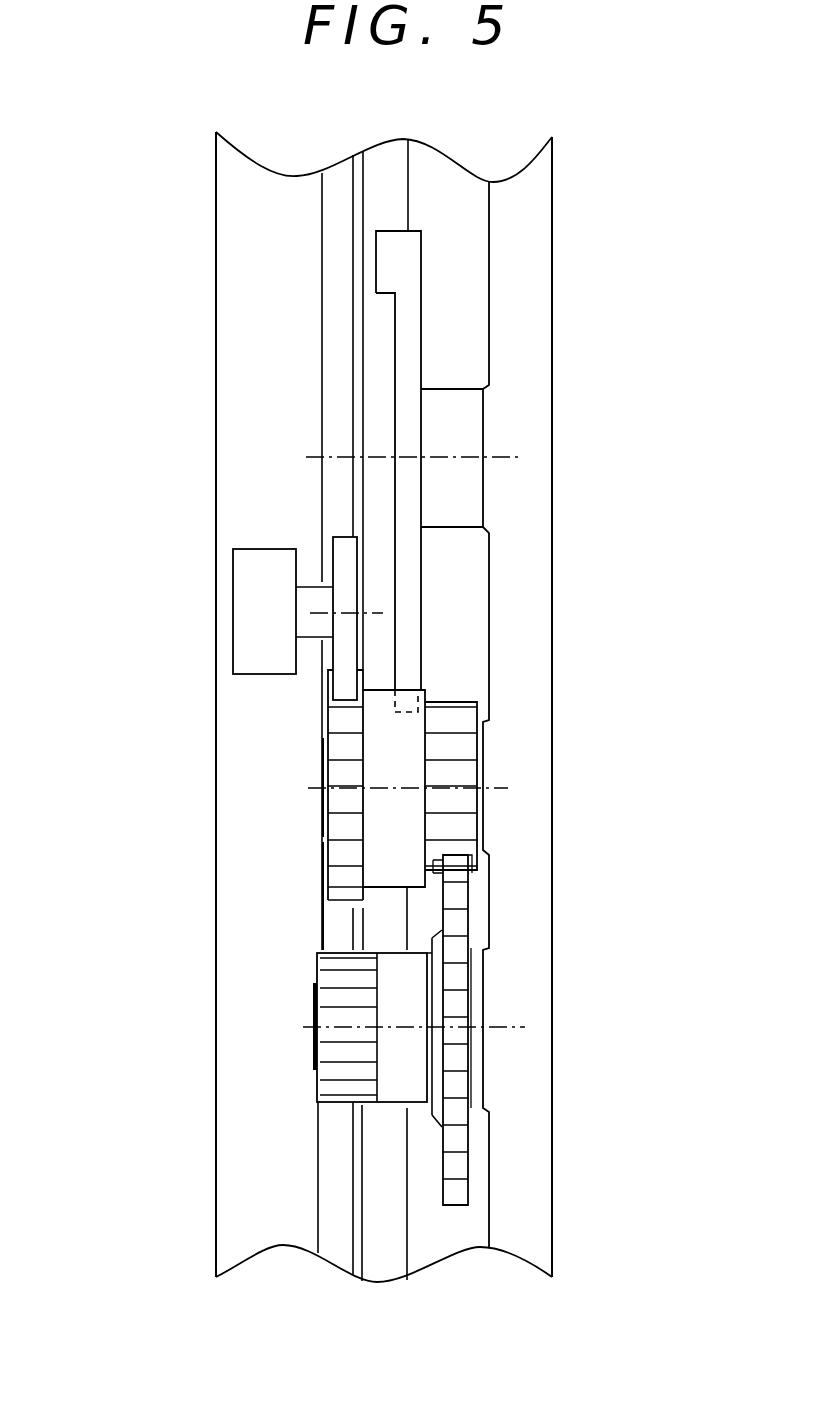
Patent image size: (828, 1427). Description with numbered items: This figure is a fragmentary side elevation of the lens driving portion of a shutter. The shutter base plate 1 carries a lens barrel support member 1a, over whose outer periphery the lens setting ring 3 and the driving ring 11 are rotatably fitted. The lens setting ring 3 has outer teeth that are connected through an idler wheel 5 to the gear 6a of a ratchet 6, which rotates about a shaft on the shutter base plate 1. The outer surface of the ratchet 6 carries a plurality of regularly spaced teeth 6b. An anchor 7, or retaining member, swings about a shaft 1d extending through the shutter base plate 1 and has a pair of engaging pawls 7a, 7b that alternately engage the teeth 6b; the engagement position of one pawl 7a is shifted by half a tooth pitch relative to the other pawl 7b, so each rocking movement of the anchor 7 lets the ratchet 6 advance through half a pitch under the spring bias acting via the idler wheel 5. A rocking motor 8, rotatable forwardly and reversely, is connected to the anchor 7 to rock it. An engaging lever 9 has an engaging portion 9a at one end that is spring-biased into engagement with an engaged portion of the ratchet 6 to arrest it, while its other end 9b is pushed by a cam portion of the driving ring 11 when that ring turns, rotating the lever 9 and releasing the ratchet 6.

The shutter base plate 1 is at (520, 300).
The lens barrel support member 1a is at (240, 1202).
The shaft 1d is at (307, 625).
The lens setting ring 3 is at (343, 426).
The idler wheel 5 is at (402, 983).
The ratchet 6 is at (323, 767).
The gear 6a is at (459, 728).
The teeth 6b is at (343, 717).
The anchor 7 is at (347, 578).
The engaging pawl 7a is at (189, 777).
The engaging pawl 7b is at (343, 683).
The rocking motor 8 is at (243, 585).
The engaging lever 9 is at (443, 427).
The engaging portion 9a is at (412, 700).
The other end 9b is at (384, 258).
The driving ring 11 is at (379, 351).